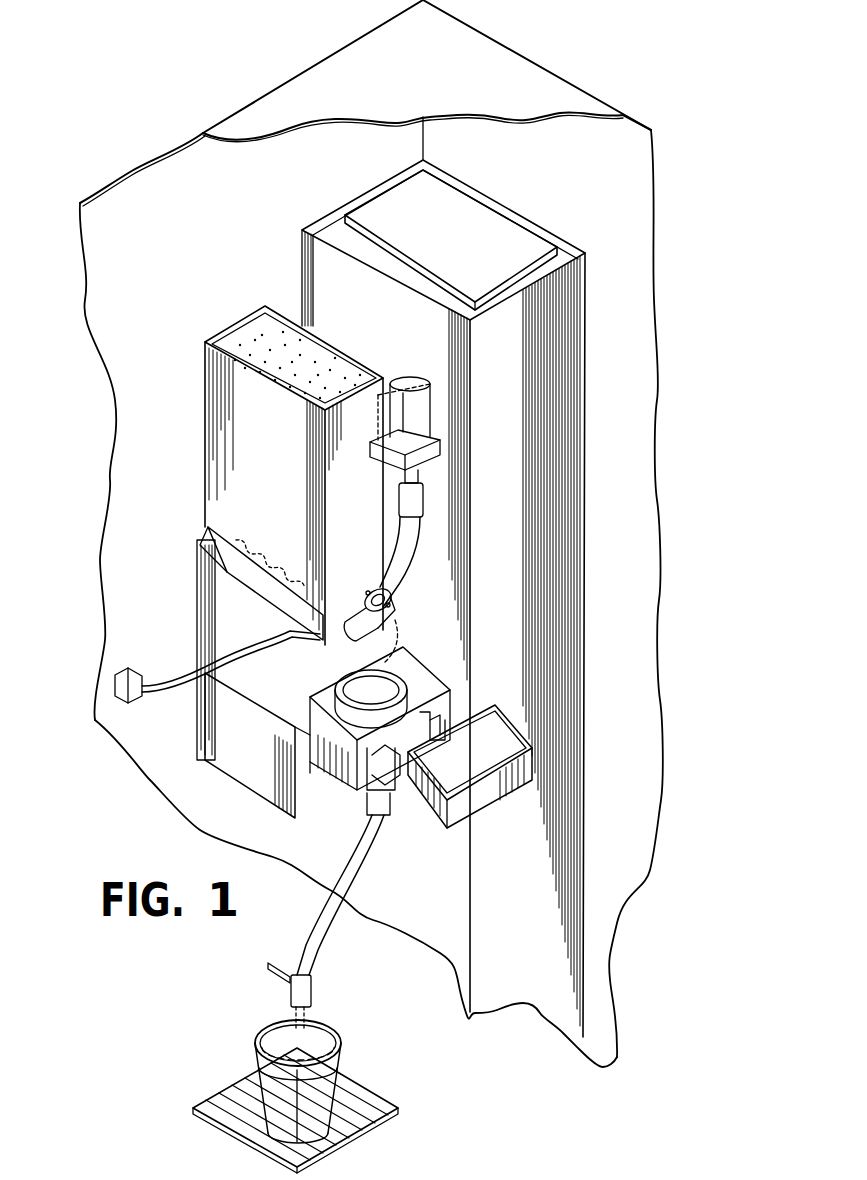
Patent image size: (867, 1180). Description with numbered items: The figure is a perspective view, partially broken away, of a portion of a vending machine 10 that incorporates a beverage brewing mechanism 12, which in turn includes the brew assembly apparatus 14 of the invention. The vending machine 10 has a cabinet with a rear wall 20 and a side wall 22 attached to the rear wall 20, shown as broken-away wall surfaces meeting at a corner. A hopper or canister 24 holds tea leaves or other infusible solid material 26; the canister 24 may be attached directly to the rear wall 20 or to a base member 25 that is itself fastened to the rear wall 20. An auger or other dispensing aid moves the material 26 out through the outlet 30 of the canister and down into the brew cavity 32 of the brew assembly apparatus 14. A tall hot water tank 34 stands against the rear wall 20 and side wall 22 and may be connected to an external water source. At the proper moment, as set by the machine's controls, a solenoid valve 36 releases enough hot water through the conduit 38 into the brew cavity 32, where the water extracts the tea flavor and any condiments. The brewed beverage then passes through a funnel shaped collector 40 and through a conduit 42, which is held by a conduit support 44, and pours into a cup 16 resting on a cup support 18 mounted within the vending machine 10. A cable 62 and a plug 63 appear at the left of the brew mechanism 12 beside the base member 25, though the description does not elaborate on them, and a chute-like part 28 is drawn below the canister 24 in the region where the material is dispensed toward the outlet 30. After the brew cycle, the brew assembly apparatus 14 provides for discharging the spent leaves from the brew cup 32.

The vending machine 10 is at (92, 442).
The beverage brewing mechanism 12 is at (148, 648).
The brew assembly apparatus 14 is at (200, 775).
The cup 16 is at (340, 1078).
The cup support 18 is at (372, 1105).
The rear wall 20 is at (246, 212).
The side wall 22 is at (550, 182).
The hopper or canister 24 is at (222, 462).
The base member 25 is at (212, 622).
The infusible solid material 26 is at (250, 345).
The auger chute 28 is at (282, 552).
The outlet 30 is at (372, 596).
The brew cavity 32 is at (393, 670).
The hot water tank 34 is at (563, 350).
The solenoid valve 36 is at (410, 380).
The conduit 38 is at (410, 570).
The funnel shaped collector 40 is at (405, 765).
The conduit 42 is at (358, 860).
The conduit support 44 is at (290, 980).
The power cable 62 is at (172, 692).
The plug 63 is at (114, 684).